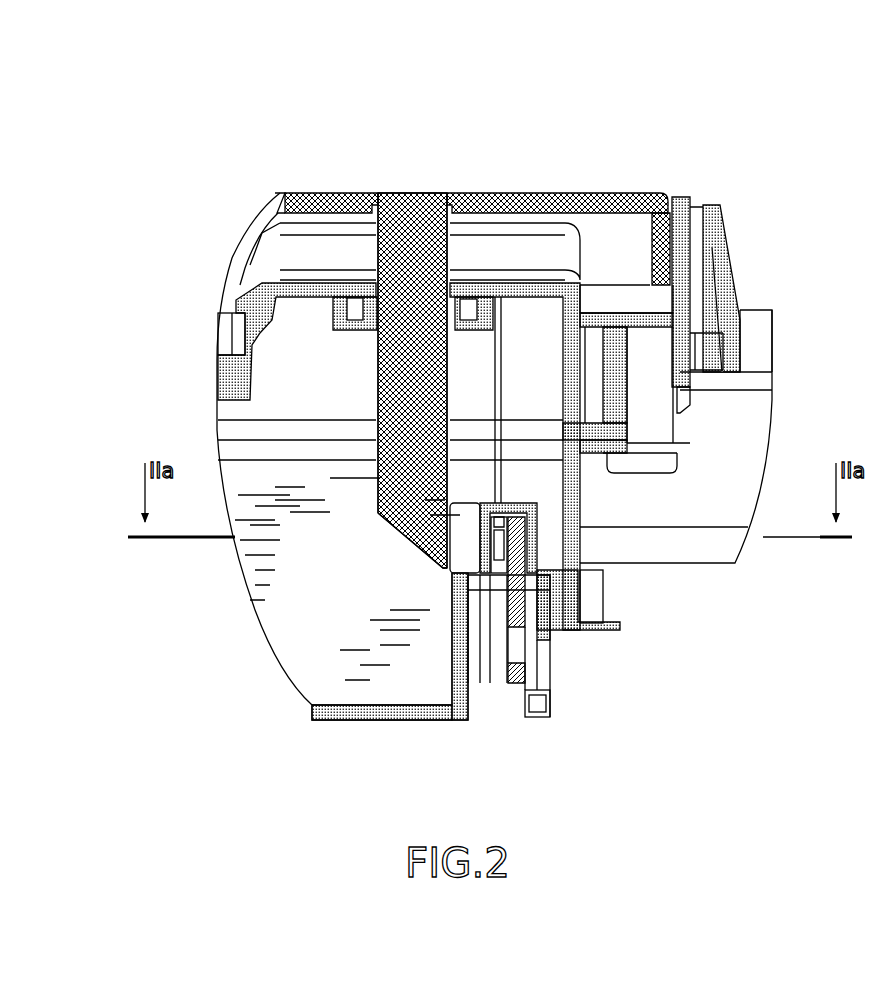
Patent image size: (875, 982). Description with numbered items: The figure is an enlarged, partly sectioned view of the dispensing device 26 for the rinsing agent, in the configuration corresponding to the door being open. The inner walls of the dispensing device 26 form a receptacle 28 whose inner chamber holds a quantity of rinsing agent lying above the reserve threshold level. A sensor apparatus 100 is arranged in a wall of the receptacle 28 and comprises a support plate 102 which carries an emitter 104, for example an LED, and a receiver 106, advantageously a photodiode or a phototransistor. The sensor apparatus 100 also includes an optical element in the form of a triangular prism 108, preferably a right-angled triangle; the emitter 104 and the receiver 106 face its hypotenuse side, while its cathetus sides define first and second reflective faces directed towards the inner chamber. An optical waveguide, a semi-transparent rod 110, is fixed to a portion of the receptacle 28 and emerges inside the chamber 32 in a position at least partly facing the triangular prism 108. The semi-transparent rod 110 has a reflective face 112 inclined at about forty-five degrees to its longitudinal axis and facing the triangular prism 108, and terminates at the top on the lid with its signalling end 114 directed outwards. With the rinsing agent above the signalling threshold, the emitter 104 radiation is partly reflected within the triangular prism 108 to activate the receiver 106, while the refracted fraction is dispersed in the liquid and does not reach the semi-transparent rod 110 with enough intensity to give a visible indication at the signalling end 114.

The dispensing device 26 is at (494, 456).
The receptacle 28 is at (730, 290).
The chamber 32 is at (617, 210).
The sensor apparatus 100 is at (532, 655).
The support plate 102 is at (500, 525).
The emitter 104 is at (510, 600).
The receiver 106 is at (499, 545).
The triangular prism 108 is at (465, 553).
The semi-transparent rod 110 is at (432, 187).
The reflective face 112 is at (402, 532).
The signalling end 114 is at (403, 190).